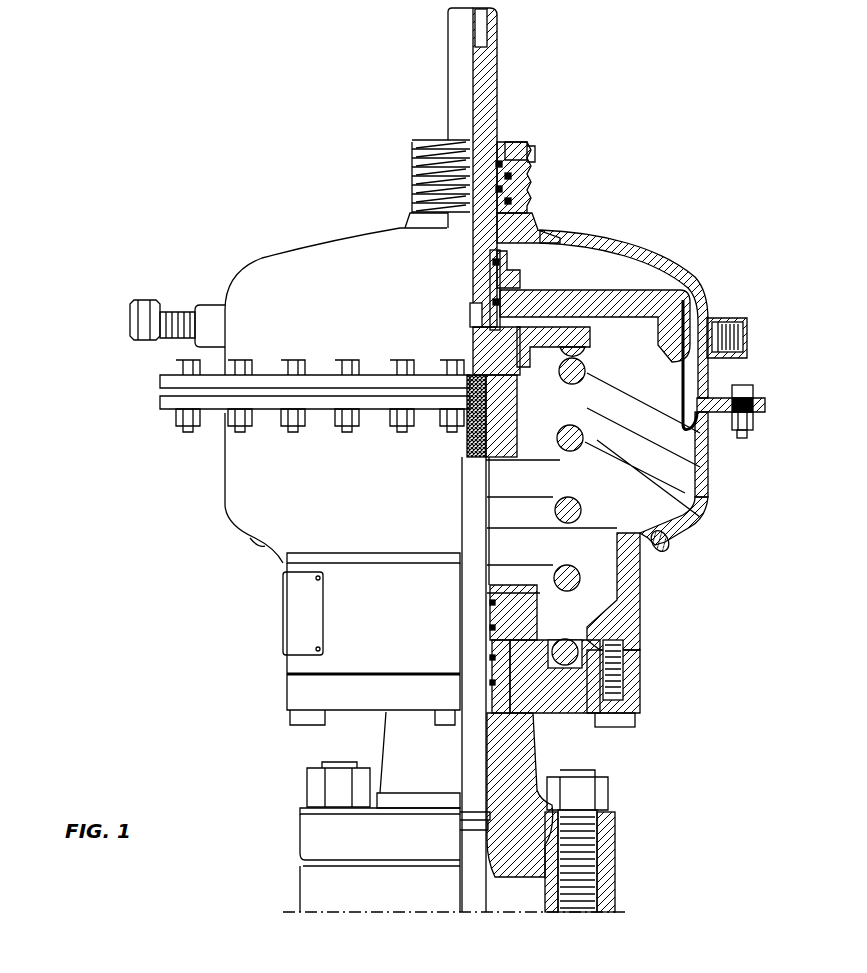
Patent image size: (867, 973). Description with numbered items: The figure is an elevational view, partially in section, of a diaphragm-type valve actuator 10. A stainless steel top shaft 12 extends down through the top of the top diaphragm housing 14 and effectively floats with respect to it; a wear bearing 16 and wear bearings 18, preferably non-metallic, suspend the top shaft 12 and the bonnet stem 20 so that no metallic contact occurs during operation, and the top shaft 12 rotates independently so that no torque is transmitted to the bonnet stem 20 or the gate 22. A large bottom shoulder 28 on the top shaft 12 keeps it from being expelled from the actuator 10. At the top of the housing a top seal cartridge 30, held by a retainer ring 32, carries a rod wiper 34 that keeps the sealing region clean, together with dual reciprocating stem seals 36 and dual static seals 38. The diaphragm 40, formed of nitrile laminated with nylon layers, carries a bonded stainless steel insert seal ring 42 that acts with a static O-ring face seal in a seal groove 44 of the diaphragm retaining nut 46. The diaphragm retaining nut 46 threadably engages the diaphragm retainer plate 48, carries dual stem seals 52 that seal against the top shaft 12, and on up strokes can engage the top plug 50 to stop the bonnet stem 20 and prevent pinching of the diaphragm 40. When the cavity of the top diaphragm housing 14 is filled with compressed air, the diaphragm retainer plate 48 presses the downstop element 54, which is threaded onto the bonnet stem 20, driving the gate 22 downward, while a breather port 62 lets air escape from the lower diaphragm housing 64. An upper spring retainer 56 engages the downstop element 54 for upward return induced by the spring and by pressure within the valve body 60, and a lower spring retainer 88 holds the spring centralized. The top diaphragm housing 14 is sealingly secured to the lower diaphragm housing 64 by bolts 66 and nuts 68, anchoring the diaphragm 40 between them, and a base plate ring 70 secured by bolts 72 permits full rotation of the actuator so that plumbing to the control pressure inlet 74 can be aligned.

The diaphragm-type valve actuator 10 is at (262, 206).
The top shaft 12 is at (497, 42).
The top diaphragm housing 14 is at (268, 252).
The wear bearing 16 is at (420, 223).
The wear bearings 18 is at (488, 595).
The bonnet stem 20 is at (470, 642).
The gate 22 is at (608, 897).
The bottom shoulder 28 is at (477, 333).
The top seal cartridge 30 is at (505, 143).
The retainer ring 32 is at (523, 146).
The rod wiper 34 is at (533, 156).
The dual reciprocating stem seals 36 is at (450, 180).
The dual static seals 38 is at (512, 200).
The diaphragm 40 is at (688, 383).
The insert seal ring 42 is at (604, 257).
The seal groove 44 is at (497, 300).
The diaphragm retaining nut 46 is at (545, 252).
The diaphragm retainer plate 48 is at (688, 298).
The top plug 50 is at (534, 222).
The dual stem seals 52 is at (491, 262).
The downstop element 54 is at (700, 514).
The upper spring retainer 56 is at (700, 488).
The valve body 60 is at (700, 450).
The breather port 62 is at (668, 548).
The lower diaphragm housing 64 is at (642, 588).
The bolts 66 is at (746, 440).
The nuts 68 is at (754, 432).
The base plate ring 70 is at (642, 700).
The bolts 72 is at (612, 722).
The control pressure inlet 74 is at (203, 303).
The lower spring retainer 88 is at (583, 685).